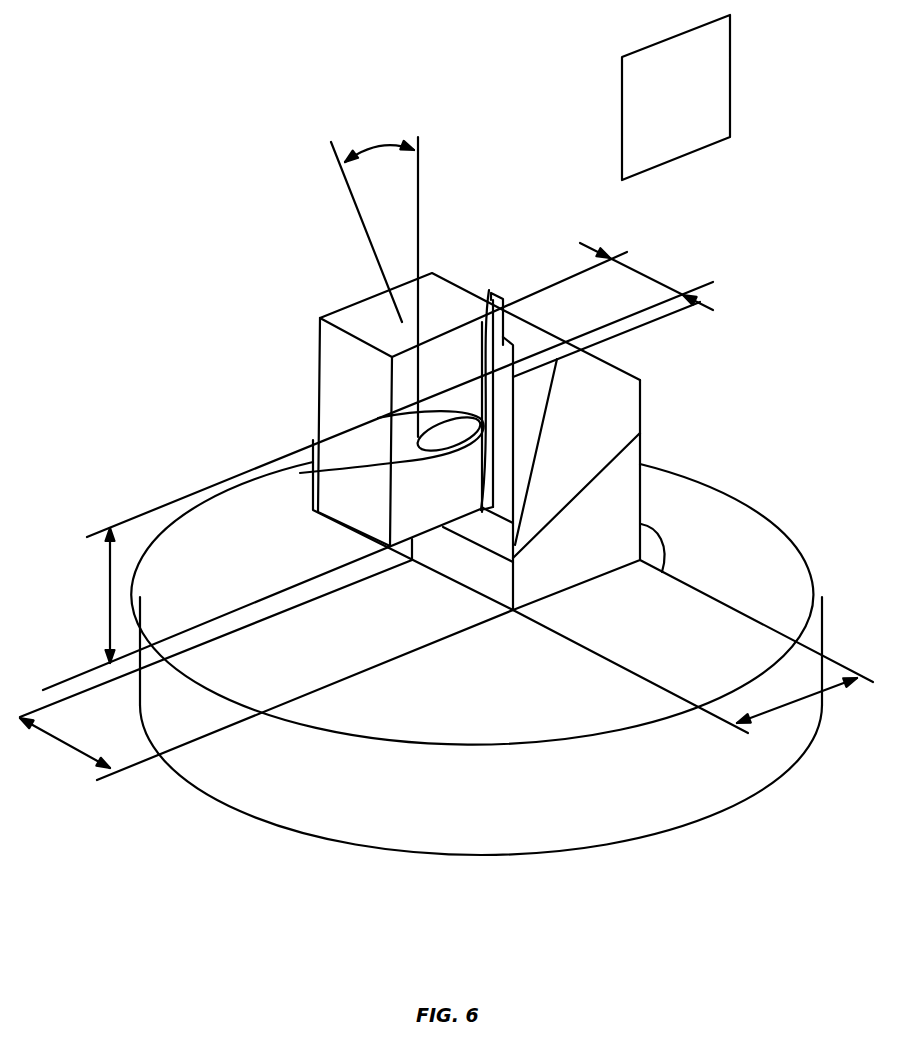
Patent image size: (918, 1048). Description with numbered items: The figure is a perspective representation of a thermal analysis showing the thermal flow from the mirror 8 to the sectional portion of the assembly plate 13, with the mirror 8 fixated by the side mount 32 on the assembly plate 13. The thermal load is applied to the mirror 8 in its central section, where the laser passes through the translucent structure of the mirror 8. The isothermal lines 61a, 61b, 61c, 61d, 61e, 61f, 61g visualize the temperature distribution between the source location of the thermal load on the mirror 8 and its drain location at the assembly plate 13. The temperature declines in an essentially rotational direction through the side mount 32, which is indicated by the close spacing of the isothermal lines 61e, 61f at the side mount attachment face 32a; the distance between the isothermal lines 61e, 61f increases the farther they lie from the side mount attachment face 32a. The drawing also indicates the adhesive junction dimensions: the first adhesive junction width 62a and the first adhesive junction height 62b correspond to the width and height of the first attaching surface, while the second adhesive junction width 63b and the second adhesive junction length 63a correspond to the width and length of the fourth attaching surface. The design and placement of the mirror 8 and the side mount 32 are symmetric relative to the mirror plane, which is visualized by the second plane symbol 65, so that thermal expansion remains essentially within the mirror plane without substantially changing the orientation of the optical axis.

The mirror 8 is at (389, 341).
The assembly plate 13 is at (598, 843).
The side mount 32 is at (642, 398).
The side mount attachment face 32a is at (489, 588).
The isothermal line 61a is at (420, 434).
The isothermal line 61b is at (337, 393).
The isothermal line 61c is at (486, 360).
The isothermal line 61d is at (501, 340).
The isothermal line 61e is at (560, 402).
The isothermal line 61f is at (640, 440).
The isothermal line 61g is at (664, 562).
The first adhesive junction width 62a is at (658, 279).
The first adhesive junction height 62b is at (263, 599).
The second adhesive junction length 63a is at (806, 699).
The second adhesive junction width 63b is at (60, 742).
The second plane symbol 65 is at (680, 146).